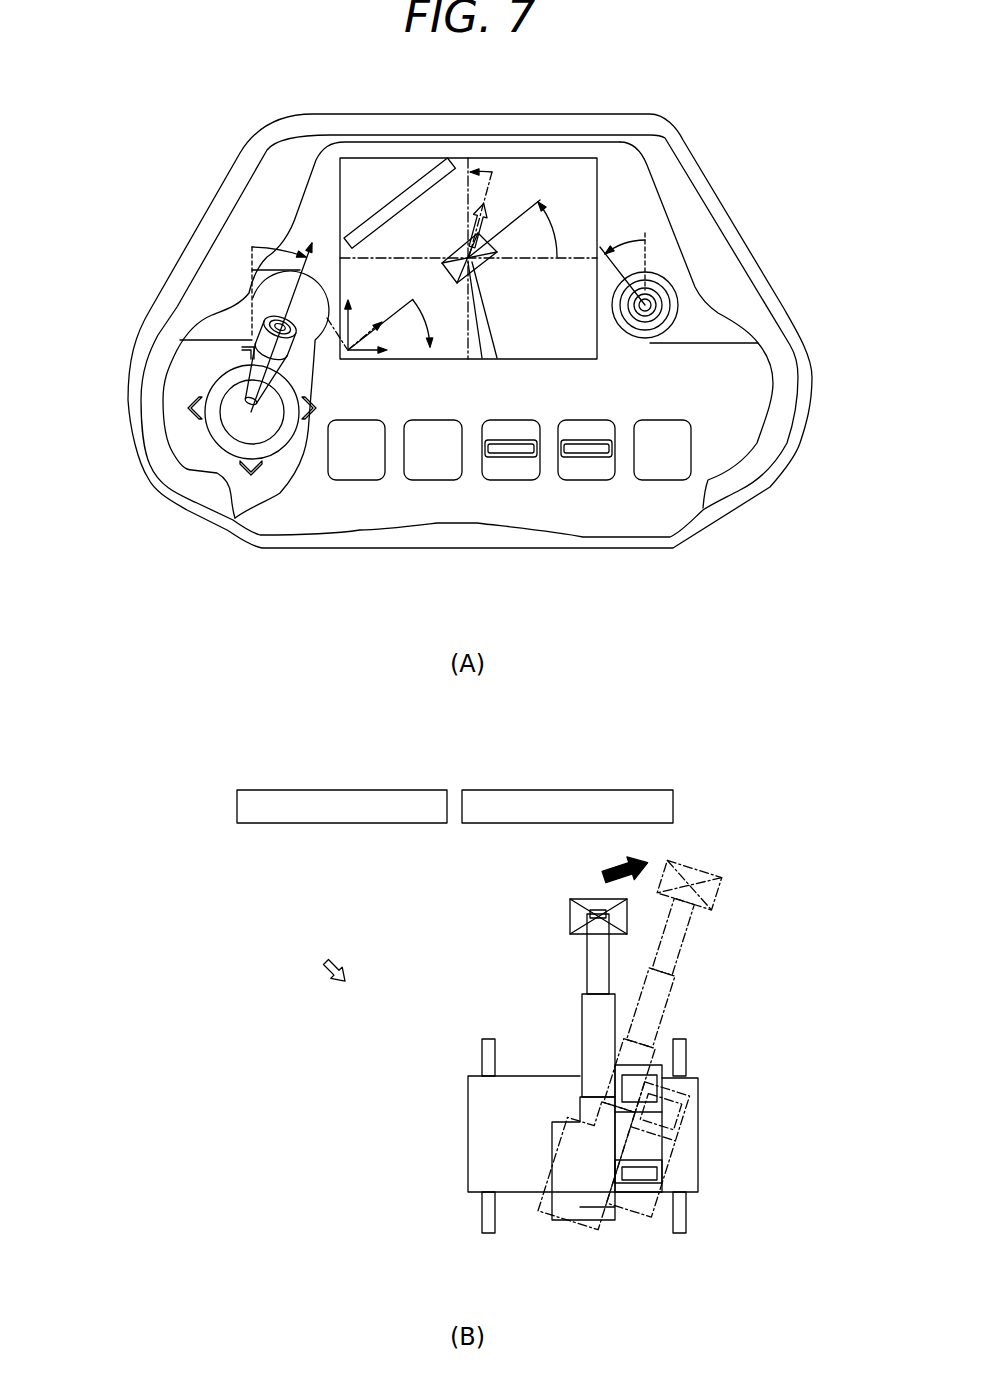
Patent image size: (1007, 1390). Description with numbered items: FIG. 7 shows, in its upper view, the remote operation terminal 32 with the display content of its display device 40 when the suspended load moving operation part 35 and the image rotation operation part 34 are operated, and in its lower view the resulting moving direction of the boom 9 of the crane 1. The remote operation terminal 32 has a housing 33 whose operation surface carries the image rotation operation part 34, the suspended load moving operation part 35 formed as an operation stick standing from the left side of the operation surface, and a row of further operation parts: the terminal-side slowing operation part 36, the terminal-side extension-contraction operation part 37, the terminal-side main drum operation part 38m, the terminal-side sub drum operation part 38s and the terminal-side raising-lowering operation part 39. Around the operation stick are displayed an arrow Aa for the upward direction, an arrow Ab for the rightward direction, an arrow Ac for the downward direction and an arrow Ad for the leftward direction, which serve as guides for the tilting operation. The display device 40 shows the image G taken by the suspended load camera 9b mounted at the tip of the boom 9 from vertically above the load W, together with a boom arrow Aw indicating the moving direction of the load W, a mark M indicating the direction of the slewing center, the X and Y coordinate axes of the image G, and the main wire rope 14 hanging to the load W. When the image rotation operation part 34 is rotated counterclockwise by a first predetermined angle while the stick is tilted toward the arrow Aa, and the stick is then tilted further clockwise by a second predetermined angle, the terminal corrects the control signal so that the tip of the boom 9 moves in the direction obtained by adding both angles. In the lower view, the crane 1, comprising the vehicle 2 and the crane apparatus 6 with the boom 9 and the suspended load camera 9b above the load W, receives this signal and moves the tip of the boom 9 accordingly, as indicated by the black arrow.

The crane 1 is at (326, 964).
The vehicle 2 is at (518, 1082).
The crane apparatus 6 is at (588, 1237).
The boom 9 is at (590, 1012).
The suspended load camera 9b is at (597, 910).
The main wire rope 14 is at (478, 297).
The remote operation terminal 32 is at (143, 134).
The housing 33 is at (272, 158).
The image rotation operation part 34 is at (658, 294).
The suspended load moving operation part 35 is at (247, 410).
The terminal-side slowing operation part 36 is at (345, 472).
The terminal-side extension-contraction operation part 37 is at (420, 472).
The terminal-side main drum operation part 38m is at (500, 472).
The terminal-side sub drum operation part 38s is at (575, 472).
The terminal-side raising-lowering operation part 39 is at (650, 472).
The display device 40 is at (561, 170).
The load W is at (452, 257).
The boom arrow Aw is at (464, 222).
The image G is at (560, 200).
The mark M is at (548, 343).
The arrow Aa is at (240, 353).
The arrow Ab is at (305, 415).
The arrow Ac is at (250, 467).
The arrow Ad is at (190, 408).